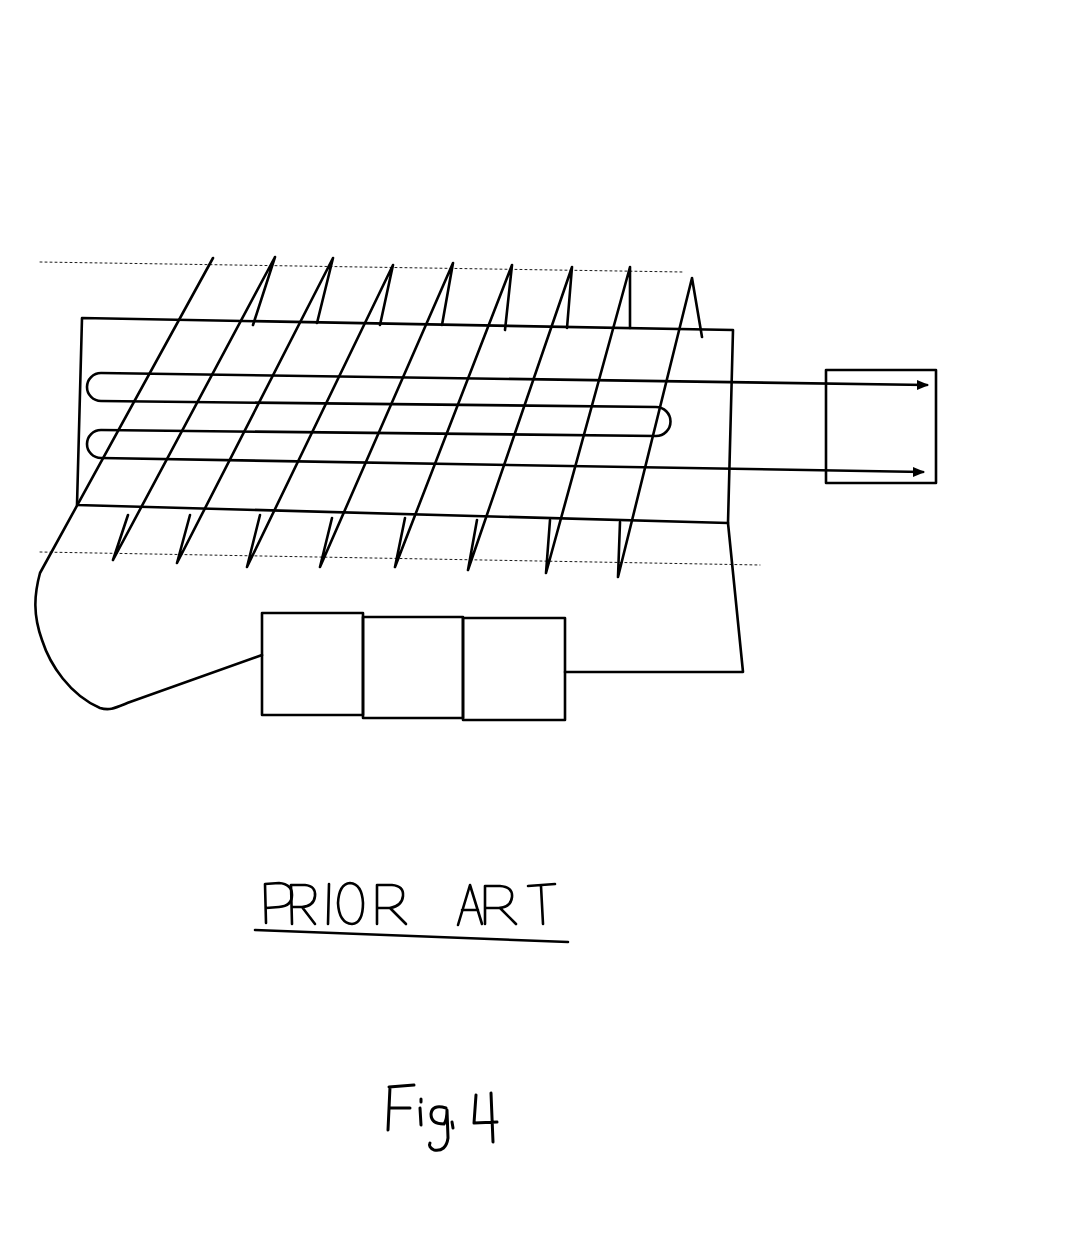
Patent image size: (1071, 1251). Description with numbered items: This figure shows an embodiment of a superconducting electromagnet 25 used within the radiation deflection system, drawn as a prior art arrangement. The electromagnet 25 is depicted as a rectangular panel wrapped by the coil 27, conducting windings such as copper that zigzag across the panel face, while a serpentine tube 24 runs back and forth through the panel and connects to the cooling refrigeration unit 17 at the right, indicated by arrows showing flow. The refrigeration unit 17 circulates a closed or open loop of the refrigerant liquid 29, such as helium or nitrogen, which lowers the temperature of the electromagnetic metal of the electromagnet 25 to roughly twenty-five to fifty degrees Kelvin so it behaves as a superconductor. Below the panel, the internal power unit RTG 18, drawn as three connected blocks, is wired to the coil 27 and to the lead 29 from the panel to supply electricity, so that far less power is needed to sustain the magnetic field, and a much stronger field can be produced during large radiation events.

The cooling refrigeration unit 17 is at (863, 370).
The internal power unit RTG 18 is at (452, 720).
The serpentine refrigerant tube 24 is at (142, 315).
The electromagnet 25 is at (95, 345).
The coil 27 is at (213, 258).
The refrigerant liquid 29 is at (748, 452).